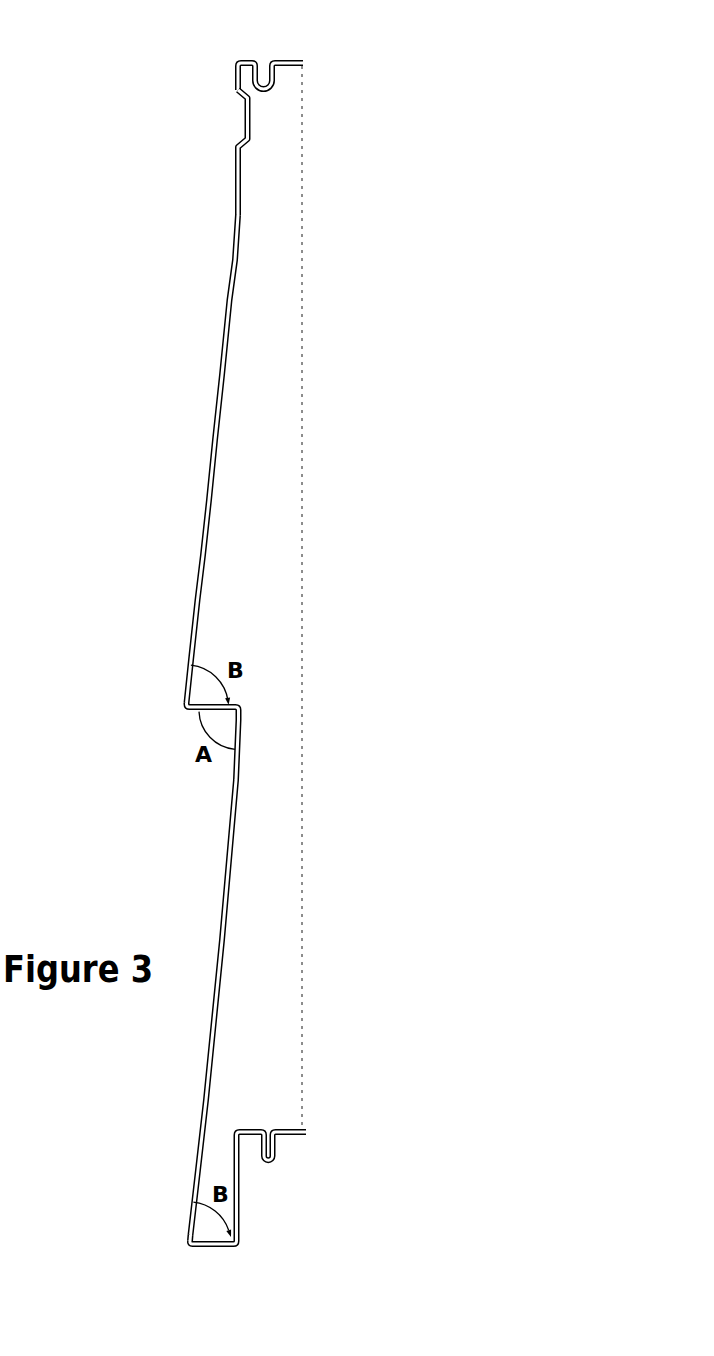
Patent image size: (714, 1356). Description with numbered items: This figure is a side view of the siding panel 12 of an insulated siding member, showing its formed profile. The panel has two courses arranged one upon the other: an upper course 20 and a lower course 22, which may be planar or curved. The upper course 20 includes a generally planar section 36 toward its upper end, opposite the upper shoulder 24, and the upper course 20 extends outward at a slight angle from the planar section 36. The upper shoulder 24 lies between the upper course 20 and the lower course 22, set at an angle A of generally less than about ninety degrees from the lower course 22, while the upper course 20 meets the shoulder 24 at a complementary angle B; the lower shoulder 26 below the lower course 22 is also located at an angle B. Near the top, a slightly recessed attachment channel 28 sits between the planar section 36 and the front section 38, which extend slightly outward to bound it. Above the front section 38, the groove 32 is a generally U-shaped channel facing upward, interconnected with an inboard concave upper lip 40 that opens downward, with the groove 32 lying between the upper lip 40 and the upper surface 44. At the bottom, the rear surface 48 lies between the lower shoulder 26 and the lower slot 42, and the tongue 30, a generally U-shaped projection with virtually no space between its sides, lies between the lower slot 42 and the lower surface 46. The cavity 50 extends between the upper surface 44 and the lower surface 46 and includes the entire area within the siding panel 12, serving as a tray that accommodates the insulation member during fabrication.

The siding panel 12 is at (346, 195).
The upper course 20 is at (222, 367).
The lower course 22 is at (203, 1076).
The upper shoulder 24 is at (212, 711).
The lower shoulder 26 is at (213, 1245).
The attachment channel 28 is at (241, 113).
The tongue 30 is at (272, 1161).
The groove 32 is at (263, 91).
The planar section 36 is at (236, 157).
The front section 38 is at (235, 72).
The upper lip 40 is at (250, 61).
The lower slot 42 is at (247, 1131).
The upper surface 44 is at (300, 62).
The lower surface 46 is at (297, 1136).
The rear surface 48 is at (238, 1203).
The cavity 50 is at (254, 565).